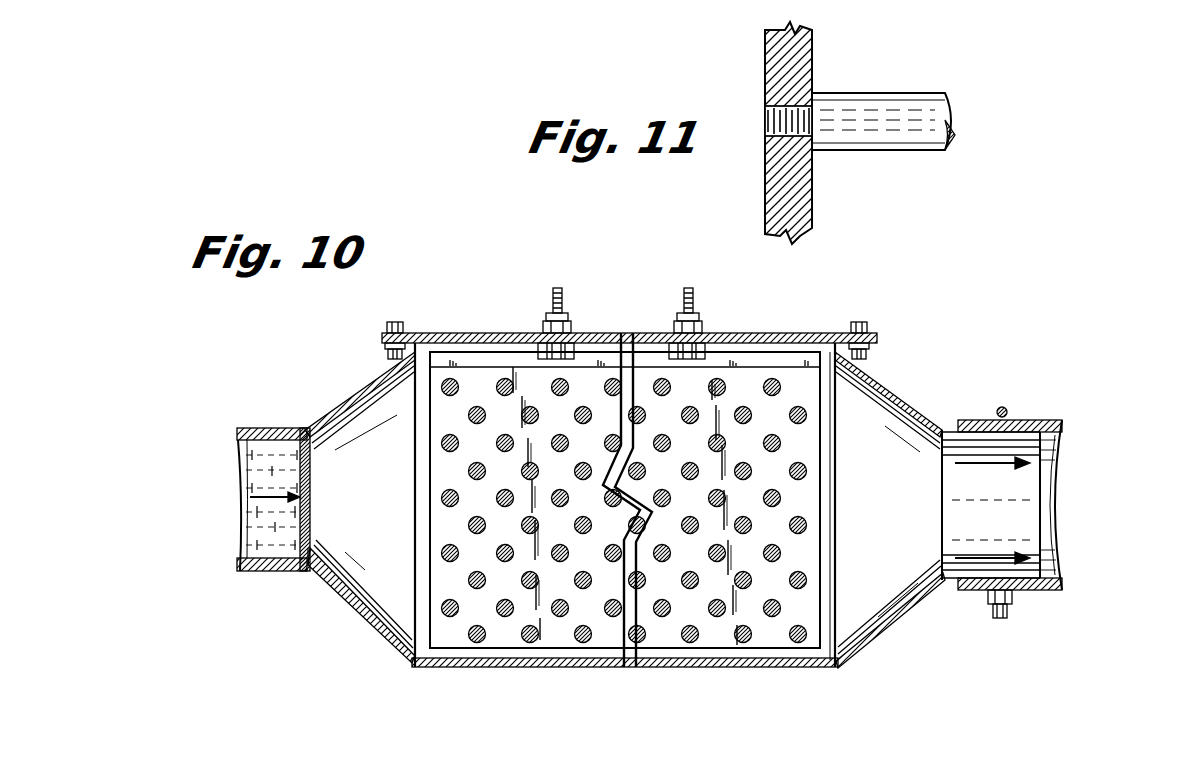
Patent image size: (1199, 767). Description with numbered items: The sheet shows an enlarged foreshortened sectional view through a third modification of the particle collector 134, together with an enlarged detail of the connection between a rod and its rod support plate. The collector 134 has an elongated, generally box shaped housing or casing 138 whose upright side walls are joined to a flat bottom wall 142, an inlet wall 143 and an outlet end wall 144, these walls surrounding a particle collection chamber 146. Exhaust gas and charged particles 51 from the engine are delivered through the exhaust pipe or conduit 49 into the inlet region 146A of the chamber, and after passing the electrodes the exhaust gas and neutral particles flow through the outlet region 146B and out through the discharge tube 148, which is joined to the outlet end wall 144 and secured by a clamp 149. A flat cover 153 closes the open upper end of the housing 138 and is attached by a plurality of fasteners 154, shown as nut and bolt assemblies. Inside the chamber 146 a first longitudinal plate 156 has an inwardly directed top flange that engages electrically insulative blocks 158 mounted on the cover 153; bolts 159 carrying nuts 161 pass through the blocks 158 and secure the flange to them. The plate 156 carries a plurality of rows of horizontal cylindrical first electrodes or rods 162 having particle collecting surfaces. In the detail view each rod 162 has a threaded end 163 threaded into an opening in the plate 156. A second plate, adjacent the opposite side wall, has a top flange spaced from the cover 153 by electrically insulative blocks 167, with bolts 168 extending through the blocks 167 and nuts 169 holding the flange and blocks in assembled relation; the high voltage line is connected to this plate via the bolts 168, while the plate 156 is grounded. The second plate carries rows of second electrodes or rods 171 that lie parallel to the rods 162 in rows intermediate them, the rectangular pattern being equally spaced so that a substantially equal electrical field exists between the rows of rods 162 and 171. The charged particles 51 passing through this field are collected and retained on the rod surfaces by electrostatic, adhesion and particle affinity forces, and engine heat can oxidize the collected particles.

In FIG. 10, the exhaust pipe or conduit 49 is at (245, 440).
In FIG. 10, the charged particles 51 is at (296, 548).
In FIG. 10, the particle collector 134 is at (935, 312).
In FIG. 10, the housing or casing 138 is at (410, 668).
In FIG. 10, the bottom wall 142 is at (560, 668).
In FIG. 10, the inlet wall 143 is at (355, 400).
In FIG. 10, the outlet end wall 144 is at (876, 637).
In FIG. 10, the particle collection chamber 146 is at (419, 666).
In FIG. 10, the inlet region of the chamber 146A is at (370, 506).
In FIG. 10, the outlet region of the chamber 146B is at (918, 512).
In FIG. 10, the discharge tube 148 is at (1022, 424).
In FIG. 10, the clamp 149 is at (1007, 406).
In FIG. 10, the flat cover 153 is at (780, 333).
In FIG. 10, the fasteners 154 is at (398, 322).
In FIG. 10, the first longitudinal plate 156 is at (433, 623).
In FIG. 11, the first longitudinal plate 156 is at (800, 52).
In FIG. 10, the electrically insulative blocks 158 is at (575, 345).
In FIG. 10, the bolts 159 is at (563, 292).
In FIG. 10, the nuts 161 is at (546, 320).
In FIG. 10, the first electrodes or rods 162 is at (503, 378).
In FIG. 11, the first electrodes or rods 162 is at (930, 100).
In FIG. 11, the threaded end 163 is at (768, 125).
In FIG. 10, the electrically insulative blocks 167 is at (706, 345).
In FIG. 10, the bolts 168 is at (693, 290).
In FIG. 10, the nuts 169 is at (677, 320).
In FIG. 10, the second electrodes or rods 171 is at (477, 462).